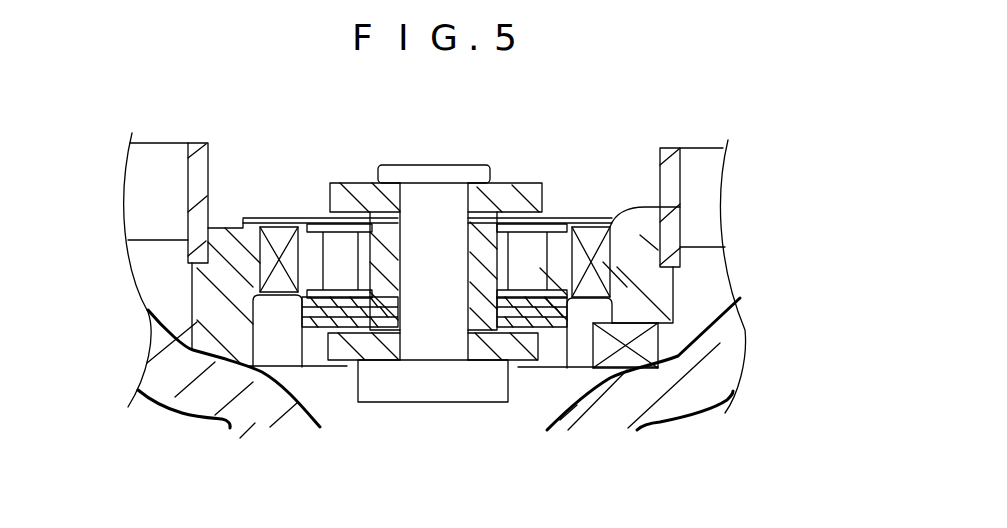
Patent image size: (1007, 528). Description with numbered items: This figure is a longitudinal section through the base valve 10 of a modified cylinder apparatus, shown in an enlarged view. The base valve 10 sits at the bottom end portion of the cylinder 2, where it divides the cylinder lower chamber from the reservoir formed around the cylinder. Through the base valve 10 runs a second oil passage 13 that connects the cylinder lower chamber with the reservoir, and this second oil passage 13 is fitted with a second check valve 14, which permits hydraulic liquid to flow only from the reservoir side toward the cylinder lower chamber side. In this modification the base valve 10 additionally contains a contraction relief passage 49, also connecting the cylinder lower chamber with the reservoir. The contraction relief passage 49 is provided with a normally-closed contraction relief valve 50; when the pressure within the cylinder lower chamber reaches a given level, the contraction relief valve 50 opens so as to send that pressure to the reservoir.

The cylinder 2 is at (650, 207).
The base valve 10 is at (240, 323).
The second oil passage 13 is at (587, 285).
The second check valve 14 is at (672, 180).
The contraction relief passage 49 is at (340, 273).
The contraction relief valve 50 is at (302, 312).